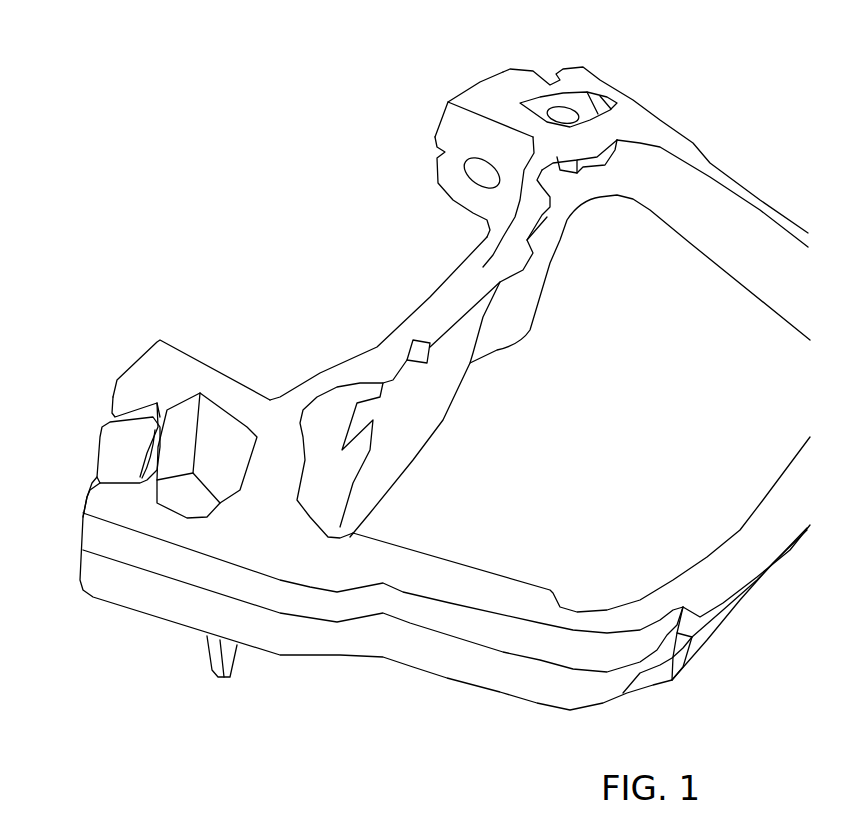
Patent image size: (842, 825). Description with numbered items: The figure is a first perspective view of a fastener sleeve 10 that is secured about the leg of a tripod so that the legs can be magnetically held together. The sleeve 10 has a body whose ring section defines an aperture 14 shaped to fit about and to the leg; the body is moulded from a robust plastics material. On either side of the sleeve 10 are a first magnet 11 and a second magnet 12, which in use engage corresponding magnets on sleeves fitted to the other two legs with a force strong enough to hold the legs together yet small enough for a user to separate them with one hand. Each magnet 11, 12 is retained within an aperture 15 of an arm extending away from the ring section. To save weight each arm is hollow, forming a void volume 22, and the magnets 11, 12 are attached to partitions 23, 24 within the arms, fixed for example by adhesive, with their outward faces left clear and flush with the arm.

The fastener sleeve 10 is at (300, 262).
The first magnet 11 is at (513, 67).
The second magnet 12 is at (98, 437).
The aperture 14 is at (583, 533).
The aperture 15 is at (117, 463).
The void volume 22 is at (603, 103).
The partition 23 is at (160, 418).
The partition 24 is at (513, 112).